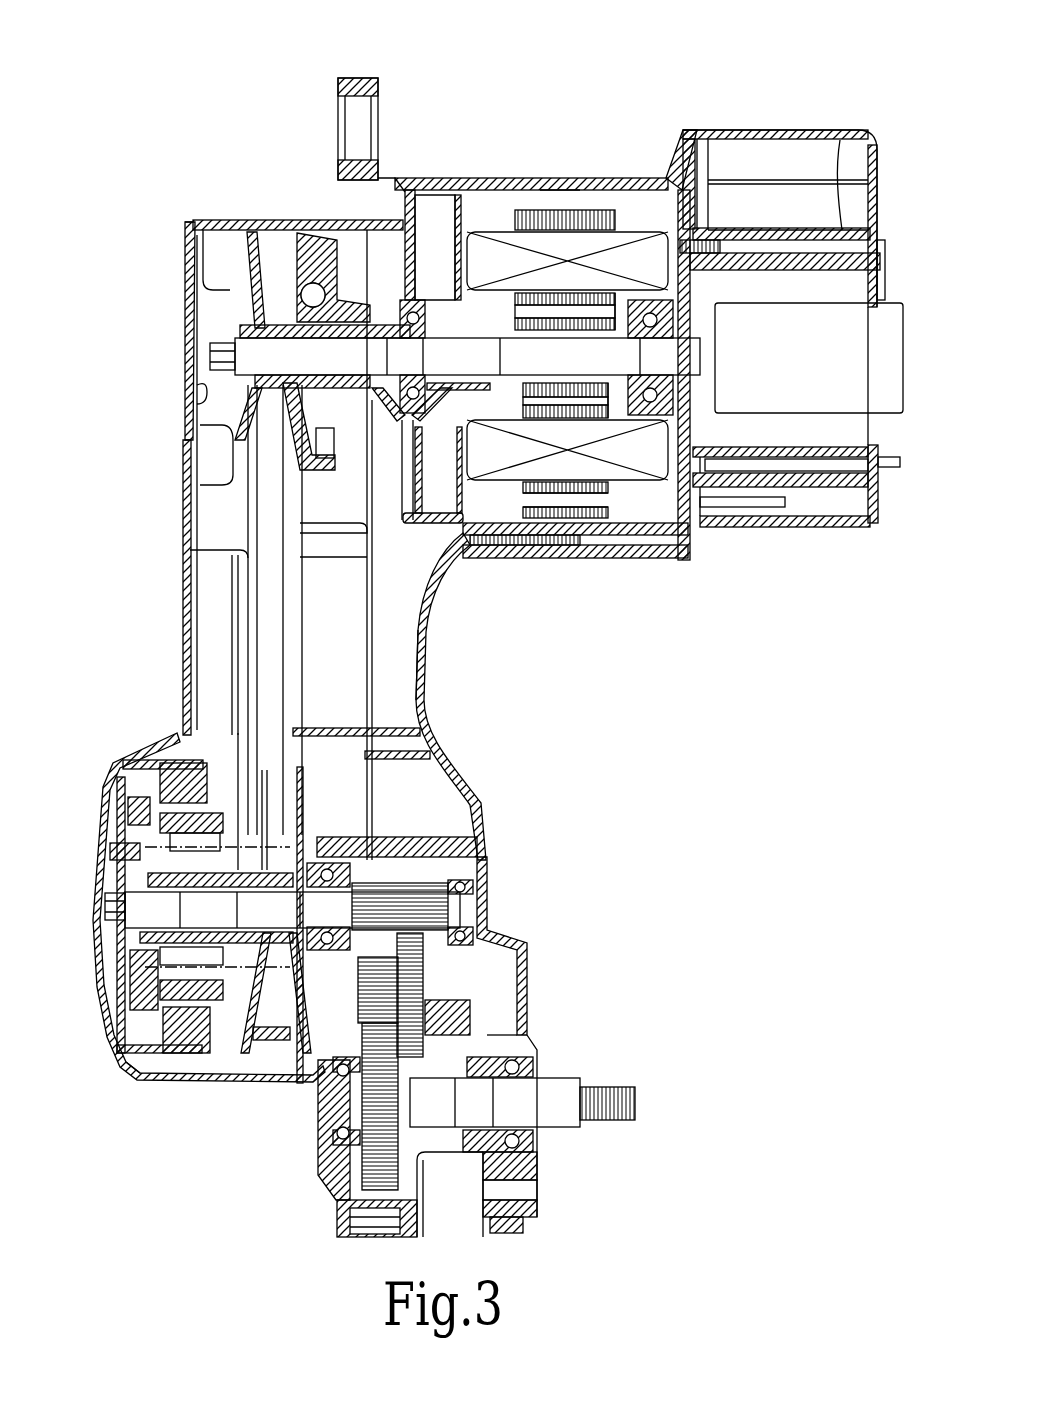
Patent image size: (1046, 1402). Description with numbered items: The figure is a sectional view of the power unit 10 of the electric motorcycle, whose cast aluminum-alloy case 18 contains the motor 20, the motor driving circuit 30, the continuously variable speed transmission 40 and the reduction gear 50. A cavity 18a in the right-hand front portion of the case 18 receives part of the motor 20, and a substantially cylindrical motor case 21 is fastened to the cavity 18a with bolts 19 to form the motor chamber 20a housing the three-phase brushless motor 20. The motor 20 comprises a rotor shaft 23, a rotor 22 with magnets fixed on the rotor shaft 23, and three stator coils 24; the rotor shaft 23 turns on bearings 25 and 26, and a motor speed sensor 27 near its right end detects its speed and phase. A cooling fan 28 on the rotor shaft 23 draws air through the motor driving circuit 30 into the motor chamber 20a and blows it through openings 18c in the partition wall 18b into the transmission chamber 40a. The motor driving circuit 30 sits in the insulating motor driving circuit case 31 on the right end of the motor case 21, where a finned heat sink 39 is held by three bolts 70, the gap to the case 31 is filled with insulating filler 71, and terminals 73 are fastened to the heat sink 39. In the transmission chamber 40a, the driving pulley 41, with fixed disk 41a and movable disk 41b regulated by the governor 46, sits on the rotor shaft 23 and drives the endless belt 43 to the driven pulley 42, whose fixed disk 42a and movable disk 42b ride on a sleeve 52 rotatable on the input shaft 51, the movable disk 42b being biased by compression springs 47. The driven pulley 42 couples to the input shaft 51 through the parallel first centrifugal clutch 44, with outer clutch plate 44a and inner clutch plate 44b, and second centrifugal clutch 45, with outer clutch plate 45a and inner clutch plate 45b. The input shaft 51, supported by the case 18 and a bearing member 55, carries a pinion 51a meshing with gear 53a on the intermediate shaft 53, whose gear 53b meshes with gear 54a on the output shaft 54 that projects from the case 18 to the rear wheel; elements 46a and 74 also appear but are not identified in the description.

The power unit 10 is at (173, 203).
The case 18 is at (398, 178).
The cavity 18a is at (468, 192).
The partition wall 18b is at (437, 567).
The openings 18c is at (455, 545).
The bolts 19 is at (600, 560).
The motor 20 is at (643, 562).
The motor chamber 20a is at (556, 185).
The motor case 21 is at (585, 176).
The rotor 22 is at (512, 290).
The rotor shaft 23 is at (517, 357).
The stator coils 24 is at (612, 232).
The bearing 25 is at (678, 543).
The bearing 26 is at (405, 300).
The motor speed sensor 27 is at (678, 326).
The cooling fan 28 is at (432, 218).
The motor driving circuit 30 is at (752, 160).
The motor driving circuit case 31 is at (808, 180).
The heat sink 39 is at (842, 150).
The continuously variable speed transmission 40 is at (160, 656).
The transmission chamber 40a is at (186, 405).
The driving pulley 41 is at (242, 326).
The fixed disk 41a is at (245, 232).
The movable disk 41b is at (312, 290).
The driven pulley 42 is at (248, 1065).
The fixed disk 42a is at (428, 739).
The movable disk 42b is at (235, 767).
The endless belt 43 is at (250, 592).
The first centrifugal clutch 44 is at (185, 1065).
The outer clutch plate 44a is at (115, 763).
The inner clutch plate 44b is at (168, 1080).
The second centrifugal clutch 45 is at (92, 840).
The outer clutch plate 45a is at (128, 1065).
The inner clutch plate 45b is at (130, 990).
The governor 46 is at (347, 430).
The bracket arm 46a is at (300, 282).
The compression springs 47 is at (150, 1075).
The reduction gear 50 is at (553, 973).
The input shaft 51 is at (447, 852).
The pinion 51a is at (433, 910).
The sleeve 52 is at (232, 878).
The intermediate shaft 53 is at (480, 958).
The gear 53a is at (500, 1032).
The gear 53b is at (302, 1068).
The output shaft 54 is at (560, 1100).
The gear 54a is at (340, 1237).
The bearing member 55 is at (337, 1203).
The bolts 70 is at (866, 215).
The insulating filler 71 is at (873, 522).
The terminals 73 is at (777, 507).
The rod 74 is at (742, 470).